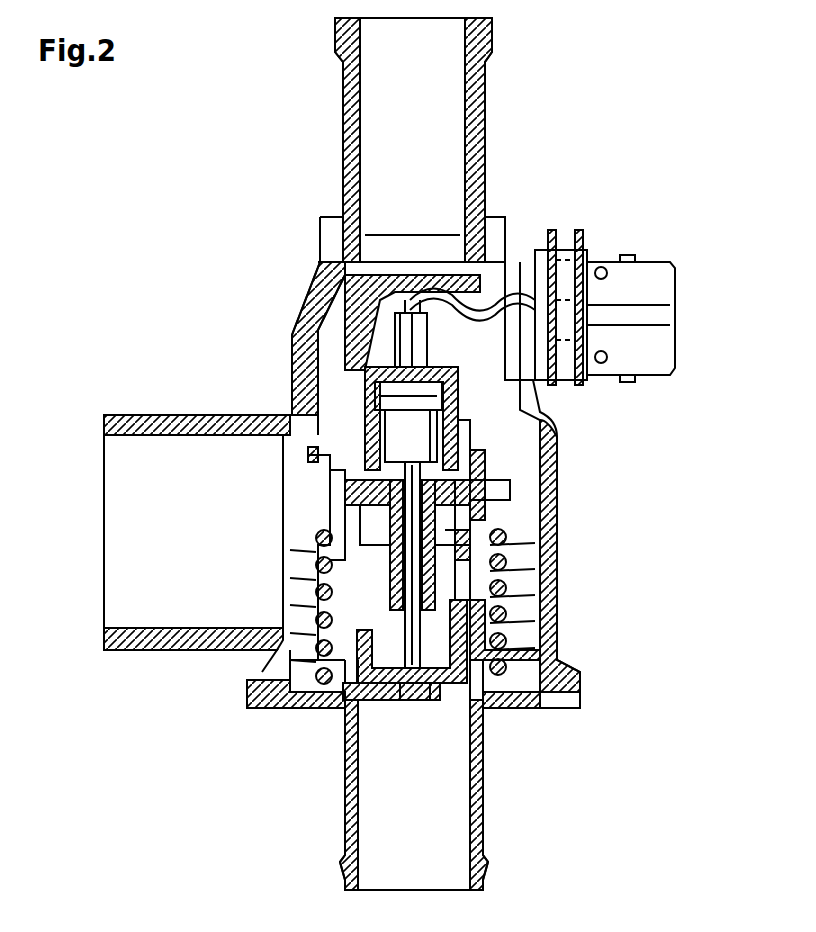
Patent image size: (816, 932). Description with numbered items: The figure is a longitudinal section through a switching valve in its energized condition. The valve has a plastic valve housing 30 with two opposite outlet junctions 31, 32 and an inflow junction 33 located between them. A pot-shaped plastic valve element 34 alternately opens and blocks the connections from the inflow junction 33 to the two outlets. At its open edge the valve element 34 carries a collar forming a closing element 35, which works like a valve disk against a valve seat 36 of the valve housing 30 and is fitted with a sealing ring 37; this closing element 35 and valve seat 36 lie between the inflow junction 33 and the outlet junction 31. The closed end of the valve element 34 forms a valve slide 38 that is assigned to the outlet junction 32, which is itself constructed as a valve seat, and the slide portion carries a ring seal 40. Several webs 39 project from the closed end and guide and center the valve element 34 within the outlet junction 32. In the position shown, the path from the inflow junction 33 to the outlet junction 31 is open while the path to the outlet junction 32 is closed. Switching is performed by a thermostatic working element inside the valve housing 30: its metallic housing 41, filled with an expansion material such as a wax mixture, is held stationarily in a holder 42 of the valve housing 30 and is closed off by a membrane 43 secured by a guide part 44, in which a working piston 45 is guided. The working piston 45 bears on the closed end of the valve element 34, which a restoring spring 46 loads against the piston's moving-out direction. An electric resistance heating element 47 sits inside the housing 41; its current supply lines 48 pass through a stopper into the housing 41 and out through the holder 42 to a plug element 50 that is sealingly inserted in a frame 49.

The valve housing 30 is at (565, 487).
The outlet junction 31 is at (458, 102).
The outlet junction 32 is at (462, 833).
The inflow junction 33 is at (112, 468).
The valve element 34 is at (540, 578).
The closing element 35 is at (486, 462).
The valve seat 36 is at (312, 492).
The sealing ring 37 is at (340, 468).
The valve slide 38 is at (508, 605).
The webs 39 is at (420, 700).
The ring seal 40 is at (490, 700).
The housing 41 is at (378, 390).
The holder 42 is at (365, 365).
The membrane 43 is at (306, 470).
The guide part 44 is at (375, 553).
The working piston 45 is at (400, 612).
The restoring spring 46 is at (470, 540).
The electric resistance heating element 47 is at (455, 438).
The current supply lines 48 is at (505, 257).
The frame 49 is at (575, 230).
The plug element 50 is at (648, 270).